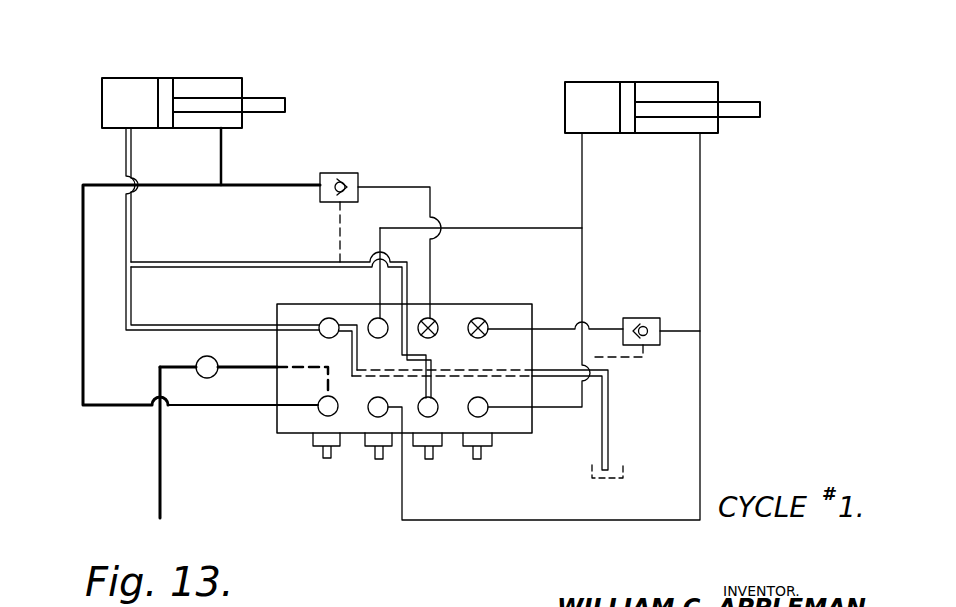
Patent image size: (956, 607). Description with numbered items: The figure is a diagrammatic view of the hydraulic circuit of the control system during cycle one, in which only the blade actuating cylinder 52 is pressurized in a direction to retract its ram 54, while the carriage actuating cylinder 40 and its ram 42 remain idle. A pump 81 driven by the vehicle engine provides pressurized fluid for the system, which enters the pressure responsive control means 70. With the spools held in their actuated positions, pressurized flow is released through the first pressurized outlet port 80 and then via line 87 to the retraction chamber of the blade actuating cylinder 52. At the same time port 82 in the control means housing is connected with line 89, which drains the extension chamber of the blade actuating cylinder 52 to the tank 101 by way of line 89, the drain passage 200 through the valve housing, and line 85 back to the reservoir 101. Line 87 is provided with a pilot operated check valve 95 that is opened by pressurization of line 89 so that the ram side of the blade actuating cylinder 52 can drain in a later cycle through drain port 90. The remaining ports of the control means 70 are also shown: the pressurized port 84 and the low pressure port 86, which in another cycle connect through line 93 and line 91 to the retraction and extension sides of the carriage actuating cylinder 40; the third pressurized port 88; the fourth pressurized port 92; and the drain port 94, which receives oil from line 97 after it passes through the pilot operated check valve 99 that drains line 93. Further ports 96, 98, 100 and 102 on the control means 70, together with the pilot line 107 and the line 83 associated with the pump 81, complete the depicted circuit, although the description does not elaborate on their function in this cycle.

The carriage actuating cylinder 40 is at (565, 92).
The ram of the carriage actuating cylinder 42 is at (733, 107).
The blade actuating cylinder 52 is at (113, 100).
The ram of the blade actuating cylinder 54 is at (255, 106).
The pressure responsive control means 70 is at (283, 438).
The first pressurized outlet port 80 is at (320, 411).
The pump 81 is at (200, 357).
The port 82 is at (319, 323).
The supply line 83 is at (158, 446).
The pressurized port 84 is at (373, 416).
The line 85 is at (608, 430).
The low pressure port 86 is at (368, 325).
The line 87 is at (220, 163).
The third pressurized port 88 is at (434, 415).
The line 89 is at (125, 145).
The drain port 90 is at (433, 318).
The line 91 is at (583, 182).
The fourth pressurized port 92 is at (484, 413).
The line 93 is at (702, 193).
The drain port 94 is at (485, 318).
The pilot operated check valve 95 is at (351, 137).
The valve port 96 is at (488, 442).
The line 97 is at (548, 327).
The valve port 98 is at (430, 452).
The pilot operated check valve 99 is at (656, 318).
The valve port 100 is at (388, 440).
The reservoir 101 is at (613, 478).
The valve port 102 is at (320, 447).
The pilot line 107 is at (314, 366).
The drain passage 200 is at (464, 366).